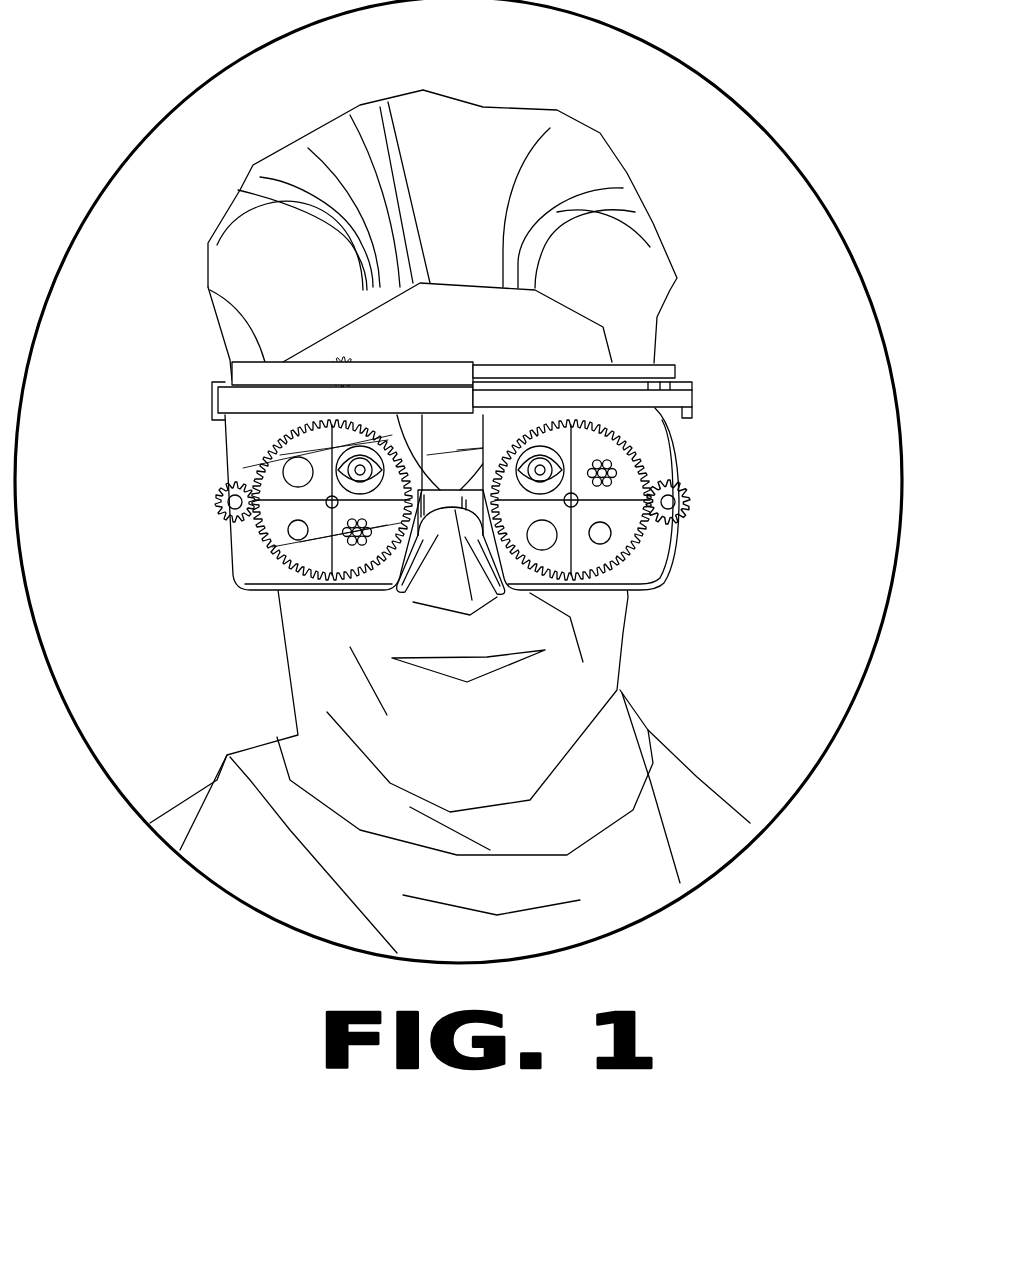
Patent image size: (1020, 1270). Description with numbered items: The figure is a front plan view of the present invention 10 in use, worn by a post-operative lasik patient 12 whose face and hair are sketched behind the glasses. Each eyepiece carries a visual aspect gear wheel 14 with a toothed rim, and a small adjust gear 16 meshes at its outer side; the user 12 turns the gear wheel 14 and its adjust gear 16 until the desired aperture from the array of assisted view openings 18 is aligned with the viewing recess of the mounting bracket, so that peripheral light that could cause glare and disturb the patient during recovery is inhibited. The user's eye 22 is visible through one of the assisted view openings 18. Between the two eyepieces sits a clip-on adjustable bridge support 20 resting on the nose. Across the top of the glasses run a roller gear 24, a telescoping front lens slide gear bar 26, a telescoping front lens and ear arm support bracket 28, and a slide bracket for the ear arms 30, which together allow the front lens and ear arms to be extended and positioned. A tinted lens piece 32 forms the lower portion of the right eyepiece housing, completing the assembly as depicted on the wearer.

The present invention 10 is at (698, 302).
The post-operative lasik patient 12 is at (625, 172).
The visual aspect gear wheel 14 is at (644, 543).
The adjust gear 16 is at (682, 512).
The assisted view openings 18 is at (350, 547).
The clip-on adjustable bridge support 20 is at (497, 592).
The user's eye 22 is at (263, 502).
The roller gear 24 is at (347, 353).
The telescoping front lens slide gear bar 26 is at (527, 376).
The telescoping front lens and ear arm support bracket 28 is at (673, 398).
The slide bracket for the ear arms 30 is at (692, 383).
The tinted lens piece 32 is at (663, 587).